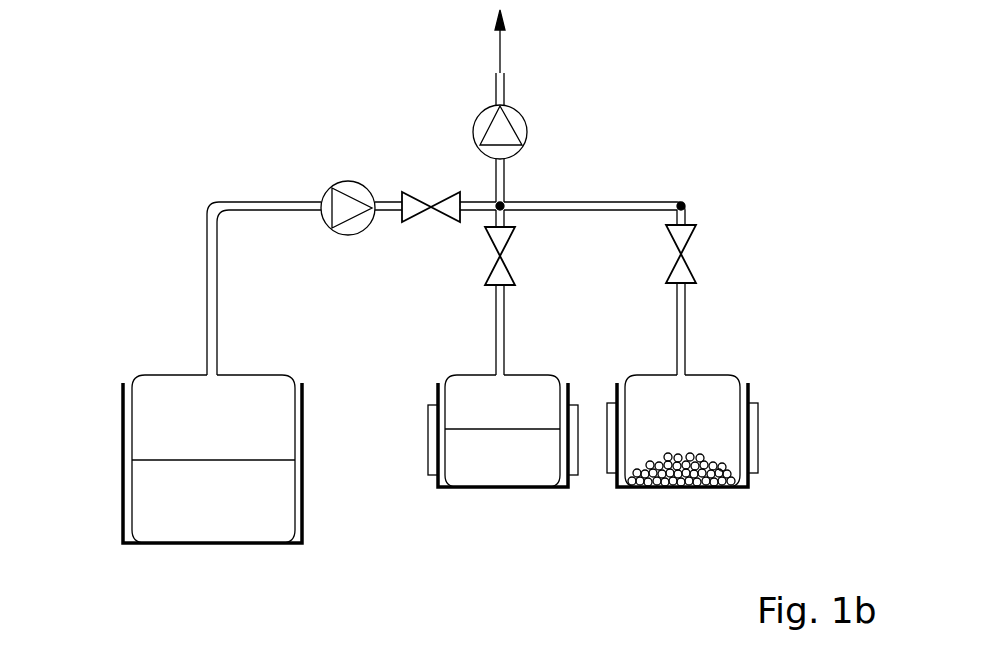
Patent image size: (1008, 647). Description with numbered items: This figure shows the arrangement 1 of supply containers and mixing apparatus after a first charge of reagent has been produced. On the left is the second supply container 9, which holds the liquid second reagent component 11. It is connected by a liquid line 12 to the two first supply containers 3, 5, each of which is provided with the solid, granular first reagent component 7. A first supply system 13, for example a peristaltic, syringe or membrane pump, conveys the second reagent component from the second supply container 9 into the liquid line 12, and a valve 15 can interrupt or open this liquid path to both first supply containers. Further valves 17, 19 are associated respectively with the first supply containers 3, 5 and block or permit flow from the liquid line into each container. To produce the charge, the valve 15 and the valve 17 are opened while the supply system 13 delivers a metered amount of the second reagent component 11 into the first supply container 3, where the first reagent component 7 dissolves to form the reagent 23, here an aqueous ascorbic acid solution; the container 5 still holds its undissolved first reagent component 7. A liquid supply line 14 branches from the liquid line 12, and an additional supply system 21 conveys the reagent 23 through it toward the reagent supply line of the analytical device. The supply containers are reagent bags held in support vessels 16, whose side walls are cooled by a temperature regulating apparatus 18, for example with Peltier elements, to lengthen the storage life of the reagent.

The arrangement 1 is at (772, 215).
The first supply container 3 is at (440, 490).
The first supply container 5 is at (740, 390).
The first reagent component 7 is at (673, 490).
The second supply container 9 is at (297, 497).
The second reagent component 11 is at (249, 531).
The liquid line 12 is at (207, 277).
The first supply system 13 is at (355, 187).
The liquid supply line 14 is at (507, 175).
The valve 15 is at (412, 214).
The support vessel 16 is at (120, 530).
The valve 17 is at (517, 272).
The temperature regulating apparatus 18 is at (430, 432).
The valve 19 is at (696, 268).
The additional supply system 21 is at (517, 117).
The reagent 23 is at (493, 480).